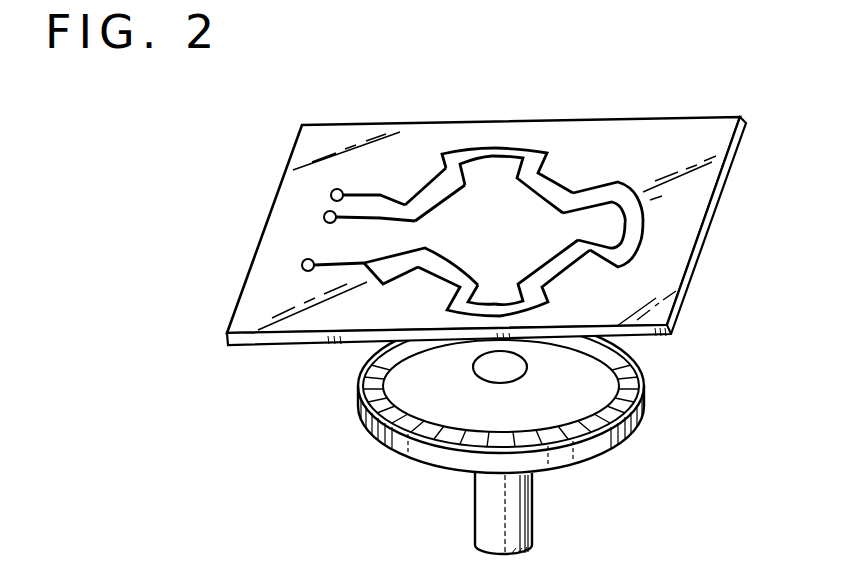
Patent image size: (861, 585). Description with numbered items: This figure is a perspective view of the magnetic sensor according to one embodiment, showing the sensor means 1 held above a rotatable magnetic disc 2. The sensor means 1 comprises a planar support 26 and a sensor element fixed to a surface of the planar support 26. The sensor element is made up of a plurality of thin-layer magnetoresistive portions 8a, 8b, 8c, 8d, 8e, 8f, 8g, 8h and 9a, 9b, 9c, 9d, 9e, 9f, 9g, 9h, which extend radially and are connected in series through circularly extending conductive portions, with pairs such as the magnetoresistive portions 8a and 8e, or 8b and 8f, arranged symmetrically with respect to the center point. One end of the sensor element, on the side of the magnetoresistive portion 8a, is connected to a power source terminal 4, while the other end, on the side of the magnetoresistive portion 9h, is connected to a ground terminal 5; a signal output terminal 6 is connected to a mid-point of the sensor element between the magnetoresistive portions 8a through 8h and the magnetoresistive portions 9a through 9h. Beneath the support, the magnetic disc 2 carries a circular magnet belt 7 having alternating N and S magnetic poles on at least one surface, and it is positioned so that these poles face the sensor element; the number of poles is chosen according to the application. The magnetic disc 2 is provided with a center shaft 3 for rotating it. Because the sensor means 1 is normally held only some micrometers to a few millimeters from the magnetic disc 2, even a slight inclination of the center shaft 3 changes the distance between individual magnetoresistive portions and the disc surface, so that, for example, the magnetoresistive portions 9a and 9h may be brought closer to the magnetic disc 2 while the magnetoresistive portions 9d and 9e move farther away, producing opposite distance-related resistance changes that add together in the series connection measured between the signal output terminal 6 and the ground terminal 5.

The sensor means 1 is at (710, 323).
The magnetic disc 2 is at (613, 437).
The center shaft 3 is at (503, 509).
The power source terminal 4 is at (331, 195).
The ground terminal 5 is at (324, 218).
The signal output terminal 6 is at (302, 265).
The circular magnet belt 7 is at (384, 437).
The magnetoresistive portion 8a is at (392, 200).
The magnetoresistive portion 8b is at (441, 160).
The magnetoresistive portion 8c is at (548, 166).
The magnetoresistive portion 8d is at (604, 186).
The magnetoresistive portion 8e is at (607, 264).
The magnetoresistive portion 8f is at (552, 297).
The magnetoresistive portion 8g is at (452, 298).
The magnetoresistive portion 8h is at (387, 287).
The magnetoresistive portion 9a is at (380, 257).
The magnetoresistive portion 9b is at (488, 283).
The magnetoresistive portion 9c is at (515, 283).
The magnetoresistive portion 9d is at (601, 241).
The magnetoresistive portion 9e is at (570, 212).
The magnetoresistive portion 9f is at (518, 179).
The magnetoresistive portion 9g is at (475, 178).
The magnetoresistive portion 9h is at (358, 222).
The planar support 26 is at (673, 140).